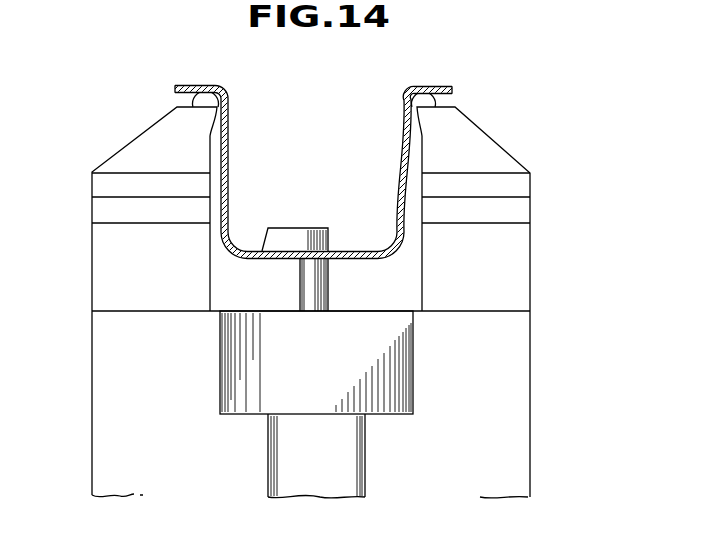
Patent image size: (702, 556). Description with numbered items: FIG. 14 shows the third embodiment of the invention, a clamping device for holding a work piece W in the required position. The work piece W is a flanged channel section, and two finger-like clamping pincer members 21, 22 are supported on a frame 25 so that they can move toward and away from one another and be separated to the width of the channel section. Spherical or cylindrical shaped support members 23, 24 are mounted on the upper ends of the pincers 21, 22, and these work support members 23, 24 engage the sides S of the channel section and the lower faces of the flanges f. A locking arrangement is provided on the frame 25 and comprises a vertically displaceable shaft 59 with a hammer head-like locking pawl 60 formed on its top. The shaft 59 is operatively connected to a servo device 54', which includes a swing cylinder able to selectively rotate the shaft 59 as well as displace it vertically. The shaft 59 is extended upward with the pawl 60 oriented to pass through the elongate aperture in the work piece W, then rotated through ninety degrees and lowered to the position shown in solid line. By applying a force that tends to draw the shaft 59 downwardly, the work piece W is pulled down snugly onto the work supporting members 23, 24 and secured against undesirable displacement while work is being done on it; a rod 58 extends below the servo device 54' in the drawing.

The clamping pincer member 21 is at (531, 233).
The clamping pincer member 22 is at (92, 225).
The support member 23 is at (437, 100).
The support member 24 is at (193, 99).
The frame 25 is at (512, 422).
The servo device 54' is at (399, 362).
The punch rod 58 is at (367, 463).
The shaft 59 is at (331, 283).
The locking pawl 60 is at (283, 234).
The work piece W is at (233, 114).
The sides S is at (230, 161).
The flanges f is at (203, 83).